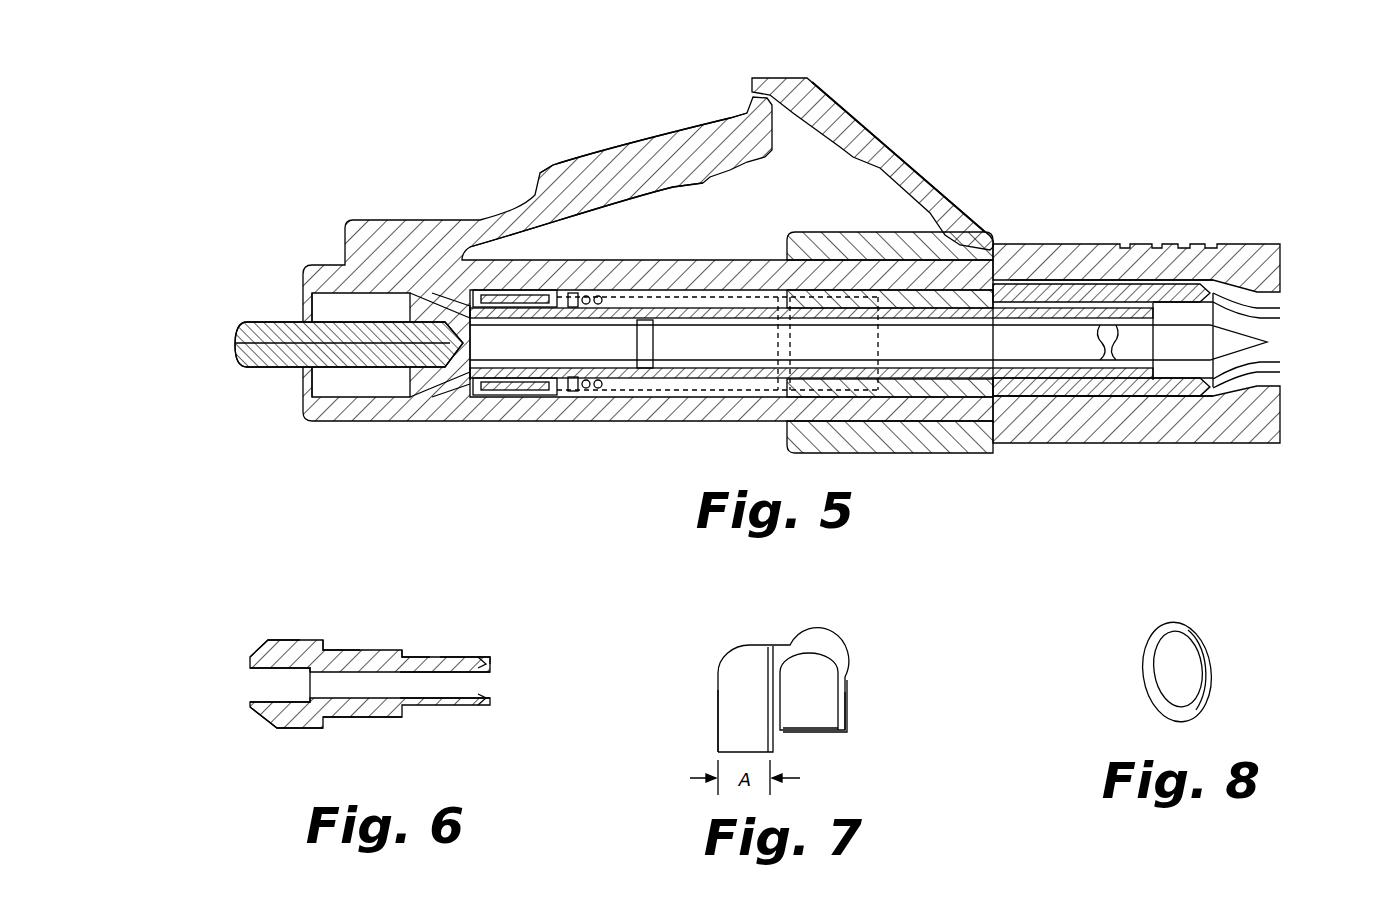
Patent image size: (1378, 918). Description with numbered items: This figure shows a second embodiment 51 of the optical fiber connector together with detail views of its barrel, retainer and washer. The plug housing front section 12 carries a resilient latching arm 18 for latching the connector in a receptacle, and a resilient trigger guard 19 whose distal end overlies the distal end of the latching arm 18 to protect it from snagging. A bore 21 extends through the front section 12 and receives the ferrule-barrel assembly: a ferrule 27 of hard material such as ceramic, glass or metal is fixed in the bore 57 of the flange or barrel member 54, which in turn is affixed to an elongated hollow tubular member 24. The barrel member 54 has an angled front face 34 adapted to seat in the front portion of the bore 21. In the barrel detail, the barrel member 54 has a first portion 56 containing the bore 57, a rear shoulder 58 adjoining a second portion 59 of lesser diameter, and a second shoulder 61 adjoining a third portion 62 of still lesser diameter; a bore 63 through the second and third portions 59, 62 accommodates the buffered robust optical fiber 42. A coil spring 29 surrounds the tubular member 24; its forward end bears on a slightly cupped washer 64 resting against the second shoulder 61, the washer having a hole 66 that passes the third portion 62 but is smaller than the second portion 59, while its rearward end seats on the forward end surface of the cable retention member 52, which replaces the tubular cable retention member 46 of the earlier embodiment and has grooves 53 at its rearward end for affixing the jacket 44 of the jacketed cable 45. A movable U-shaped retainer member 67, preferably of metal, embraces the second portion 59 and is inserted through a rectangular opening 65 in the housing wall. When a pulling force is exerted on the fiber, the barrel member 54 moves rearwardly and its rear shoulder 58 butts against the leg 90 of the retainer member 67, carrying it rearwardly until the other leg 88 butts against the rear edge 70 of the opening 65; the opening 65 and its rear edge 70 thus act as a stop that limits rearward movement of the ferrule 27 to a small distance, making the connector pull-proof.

In FIG. 5, the second embodiment 51 is at (900, 90).
In FIG. 5, the resilient latching arm 18 is at (640, 162).
In FIG. 5, the resilient trigger guard 19 is at (918, 172).
In FIG. 5, the bore 21 is at (308, 406).
In FIG. 5, the ferrule 27 is at (262, 300).
In FIG. 5, the sloping front face 34 is at (432, 305).
In FIG. 6, the sloping front face 34 is at (268, 716).
In FIG. 5, the buffered robust optical fiber 42 is at (236, 338).
In FIG. 5, the coil spring 29 is at (757, 300).
In FIG. 5, the front section 12 is at (686, 421).
In FIG. 5, the hollow tubular member 24 is at (724, 380).
In FIG. 5, the rectangular opening 65 is at (546, 290).
In FIG. 5, the rear edge 70 is at (548, 394).
In FIG. 5, the U-shaped retainer member 67 is at (606, 290).
In FIG. 7, the U-shaped retainer member 67 is at (773, 645).
In FIG. 5, the cupped washer 64 is at (575, 384).
In FIG. 8, the cupped washer 64 is at (1166, 622).
In FIG. 5, the flange or barrel member 54 is at (476, 396).
In FIG. 6, the flange or barrel member 54 is at (371, 654).
In FIG. 5, the tubular cable retention member 46 is at (1241, 244).
In FIG. 5, the cable retention member 52 is at (1088, 404).
In FIG. 5, the grooves 53 is at (1100, 248).
In FIG. 5, the jacketed cable 45 is at (1225, 356).
In FIG. 5, the jacket 44 is at (1266, 384).
In FIG. 6, the first portion 56 is at (272, 644).
In FIG. 6, the rear shoulder 58 is at (323, 645).
In FIG. 6, the second shoulder 61 is at (405, 655).
In FIG. 6, the third portion 62 is at (456, 659).
In FIG. 6, the bore 63 is at (491, 686).
In FIG. 6, the bore 57 is at (262, 700).
In FIG. 6, the second portion 59 is at (360, 718).
In FIG. 7, the leg 90 is at (718, 698).
In FIG. 7, the leg 88 is at (847, 690).
In FIG. 8, the hole 66 is at (1176, 667).